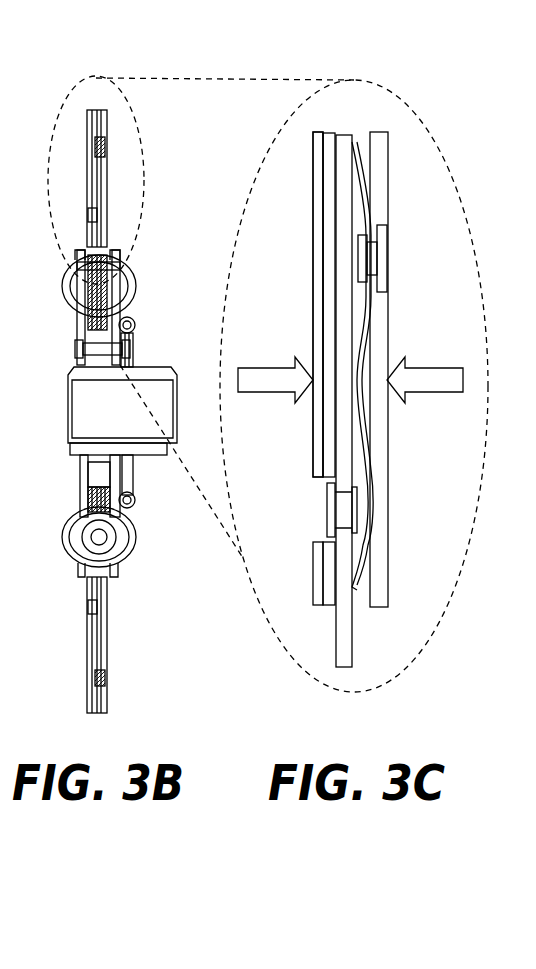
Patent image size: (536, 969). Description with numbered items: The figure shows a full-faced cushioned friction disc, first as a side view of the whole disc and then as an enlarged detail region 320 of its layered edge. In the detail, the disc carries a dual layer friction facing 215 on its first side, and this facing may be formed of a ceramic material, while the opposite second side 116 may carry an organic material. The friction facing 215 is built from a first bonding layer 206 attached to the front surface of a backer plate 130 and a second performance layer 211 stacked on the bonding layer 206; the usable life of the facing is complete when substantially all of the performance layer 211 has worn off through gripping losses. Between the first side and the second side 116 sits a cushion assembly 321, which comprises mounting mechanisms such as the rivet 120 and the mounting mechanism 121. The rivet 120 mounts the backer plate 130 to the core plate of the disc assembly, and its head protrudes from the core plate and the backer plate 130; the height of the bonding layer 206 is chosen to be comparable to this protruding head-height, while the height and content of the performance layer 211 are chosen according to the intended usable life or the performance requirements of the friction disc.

The enlarged detail region 320 is at (437, 102).
The first bonding layer 206 is at (330, 137).
The second performance layer 211 is at (320, 162).
The friction facing 215 is at (307, 250).
The cushion assembly 321 is at (357, 157).
The mounting mechanism 121 is at (372, 255).
The rivet 120 is at (342, 512).
The second side 116 is at (382, 512).
The backer plate 130 is at (347, 667).